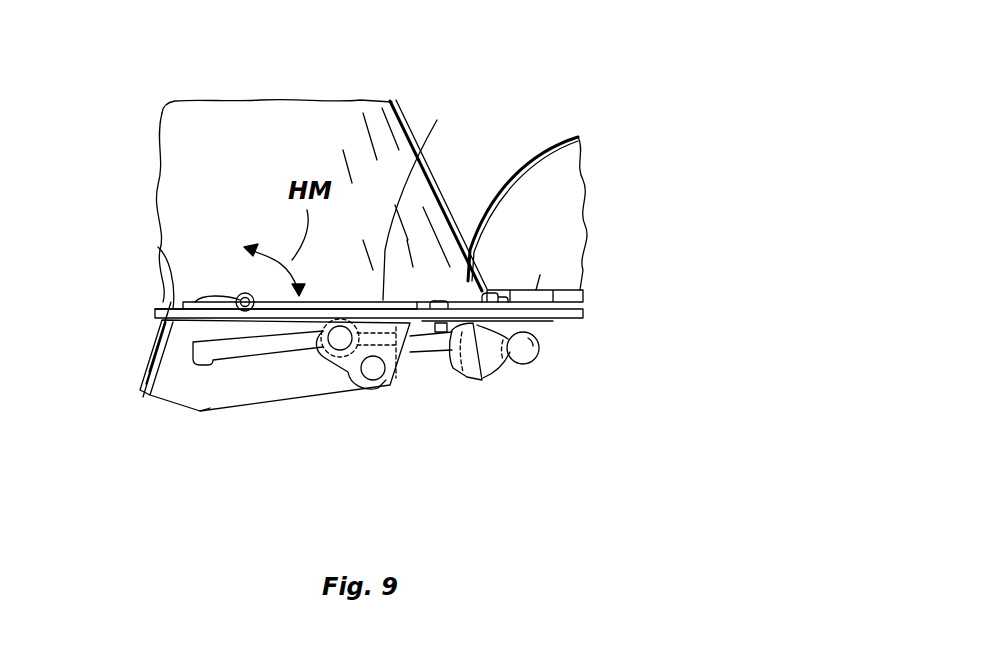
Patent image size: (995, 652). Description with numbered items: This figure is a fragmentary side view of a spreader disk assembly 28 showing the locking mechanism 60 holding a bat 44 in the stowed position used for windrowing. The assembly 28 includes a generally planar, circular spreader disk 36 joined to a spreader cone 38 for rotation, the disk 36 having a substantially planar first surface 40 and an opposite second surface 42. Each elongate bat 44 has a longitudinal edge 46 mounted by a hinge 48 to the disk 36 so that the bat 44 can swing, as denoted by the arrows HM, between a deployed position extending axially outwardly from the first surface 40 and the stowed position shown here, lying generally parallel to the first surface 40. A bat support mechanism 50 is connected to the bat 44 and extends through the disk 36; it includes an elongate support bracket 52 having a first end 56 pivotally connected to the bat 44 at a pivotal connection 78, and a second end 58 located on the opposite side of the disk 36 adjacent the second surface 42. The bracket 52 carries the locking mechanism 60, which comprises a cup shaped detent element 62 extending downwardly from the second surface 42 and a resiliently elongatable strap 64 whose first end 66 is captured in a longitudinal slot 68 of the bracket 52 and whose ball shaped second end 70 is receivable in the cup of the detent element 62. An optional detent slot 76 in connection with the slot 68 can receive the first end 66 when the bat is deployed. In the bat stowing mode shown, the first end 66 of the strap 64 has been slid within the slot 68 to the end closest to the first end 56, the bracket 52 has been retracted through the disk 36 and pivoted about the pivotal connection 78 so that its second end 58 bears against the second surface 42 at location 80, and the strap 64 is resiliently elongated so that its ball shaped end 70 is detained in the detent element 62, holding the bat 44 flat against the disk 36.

The spreader disk assembly 28 is at (593, 312).
The spreader disk 36 is at (155, 301).
The spreader cone 38 is at (440, 193).
The first surface 40 is at (540, 275).
The second surface 42 is at (163, 320).
The bat 44 is at (605, 75).
The longitudinal edge 46 is at (428, 230).
The hinge 48 is at (238, 296).
The bat support mechanism 50 is at (239, 411).
The support bracket 52 is at (239, 381).
The first end 56 is at (405, 393).
The second end 58 is at (150, 392).
The locking mechanism 60 is at (550, 396).
The detent element 62 is at (493, 380).
The strap 64 is at (435, 348).
The first end 66 is at (346, 388).
The slot 68 is at (258, 350).
The ball shaped second end 70 is at (480, 381).
The detent slot 76 is at (199, 411).
The pivotal connection 78 is at (378, 385).
The location 80 is at (157, 247).